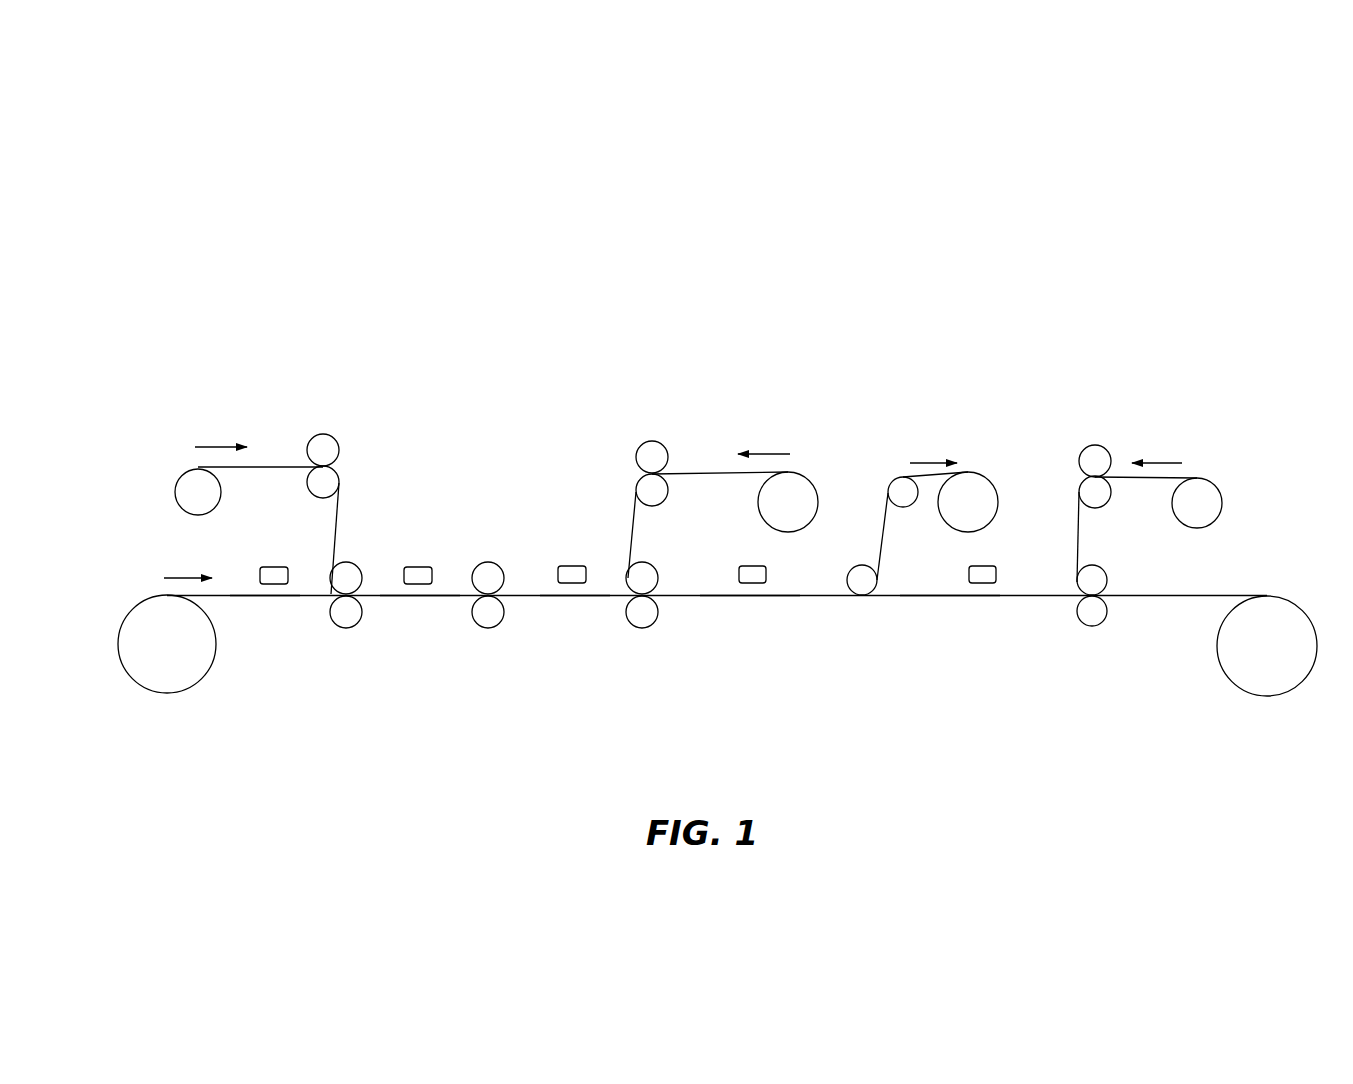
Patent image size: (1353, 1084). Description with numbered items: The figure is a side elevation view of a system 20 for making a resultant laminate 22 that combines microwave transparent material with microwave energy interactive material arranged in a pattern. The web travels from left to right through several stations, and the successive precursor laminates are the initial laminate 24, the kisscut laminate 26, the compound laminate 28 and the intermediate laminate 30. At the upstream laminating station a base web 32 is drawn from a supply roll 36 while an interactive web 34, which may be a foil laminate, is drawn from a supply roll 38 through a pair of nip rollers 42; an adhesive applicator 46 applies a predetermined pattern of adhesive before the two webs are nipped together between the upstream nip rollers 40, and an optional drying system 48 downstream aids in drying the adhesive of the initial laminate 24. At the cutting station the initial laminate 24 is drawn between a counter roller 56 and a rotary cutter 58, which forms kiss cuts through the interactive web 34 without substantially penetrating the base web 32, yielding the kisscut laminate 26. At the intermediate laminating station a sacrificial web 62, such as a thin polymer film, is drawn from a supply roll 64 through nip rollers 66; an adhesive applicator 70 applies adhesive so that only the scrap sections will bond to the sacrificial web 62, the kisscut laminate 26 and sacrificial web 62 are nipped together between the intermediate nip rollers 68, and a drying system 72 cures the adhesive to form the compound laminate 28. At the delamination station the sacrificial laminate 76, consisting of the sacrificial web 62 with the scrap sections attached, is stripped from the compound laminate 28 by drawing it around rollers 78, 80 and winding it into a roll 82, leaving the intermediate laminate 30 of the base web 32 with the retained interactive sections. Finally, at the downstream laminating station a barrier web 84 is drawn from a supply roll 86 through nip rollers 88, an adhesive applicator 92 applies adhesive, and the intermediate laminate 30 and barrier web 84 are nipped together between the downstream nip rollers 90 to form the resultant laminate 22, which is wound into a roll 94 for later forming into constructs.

The system 20 is at (1122, 215).
The resultant laminate 22 is at (1183, 597).
The initial laminate 24 is at (422, 597).
The kisscut laminate 26 is at (575, 597).
The compound laminate 28 is at (744, 597).
The intermediate laminate 30 is at (950, 597).
The base web 32 is at (262, 597).
The interactive web 34 is at (267, 465).
The supply roll 36 is at (167, 695).
The supply roll 38 is at (175, 498).
The upstream nip rollers 40 is at (345, 631).
The nip rollers 42 is at (327, 433).
The adhesive applicator 46 is at (275, 565).
The drying system 48 is at (417, 565).
The counter roller 56 is at (493, 628).
The rotary cutter 58 is at (488, 560).
The sacrificial web 62 is at (708, 470).
The supply roll 64 is at (809, 479).
The nip rollers 66 is at (643, 442).
The intermediate nip rollers 68 is at (638, 629).
The adhesive applicator 70 is at (573, 565).
The drying system 72 is at (747, 565).
The sacrificial laminate 76 is at (908, 477).
The roller 78 is at (850, 572).
The roller 80 is at (913, 505).
The roll 82 is at (985, 477).
The barrier web 84 is at (1118, 477).
The supply roll 86 is at (1220, 507).
The nip rollers 88 is at (1095, 443).
The downstream nip rollers 90 is at (1085, 633).
The adhesive applicator 92 is at (987, 565).
The roll 94 is at (1267, 695).